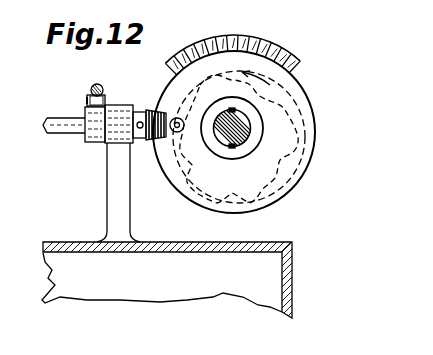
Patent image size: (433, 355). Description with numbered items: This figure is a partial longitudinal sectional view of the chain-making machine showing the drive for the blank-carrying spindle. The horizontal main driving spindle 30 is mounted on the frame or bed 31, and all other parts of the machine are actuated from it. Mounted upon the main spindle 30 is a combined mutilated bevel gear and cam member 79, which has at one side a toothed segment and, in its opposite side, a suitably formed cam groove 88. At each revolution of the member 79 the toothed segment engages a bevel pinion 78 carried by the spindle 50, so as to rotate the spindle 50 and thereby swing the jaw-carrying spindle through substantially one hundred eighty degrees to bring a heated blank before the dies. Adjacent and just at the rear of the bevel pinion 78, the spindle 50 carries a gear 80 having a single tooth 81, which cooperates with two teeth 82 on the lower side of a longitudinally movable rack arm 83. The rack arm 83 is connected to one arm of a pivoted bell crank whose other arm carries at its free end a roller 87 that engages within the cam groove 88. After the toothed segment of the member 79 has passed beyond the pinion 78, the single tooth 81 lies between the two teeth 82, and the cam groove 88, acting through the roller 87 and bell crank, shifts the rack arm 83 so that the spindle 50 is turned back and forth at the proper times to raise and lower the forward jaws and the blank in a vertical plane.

The main driving spindle 30 is at (250, 140).
The frame or bed 31 is at (292, 265).
The spindle 50 is at (68, 134).
The bevel pinion 78 is at (148, 143).
The combined mutilated bevel gear and cam member 79 is at (303, 70).
The gear 80 is at (96, 141).
The single tooth 81 is at (88, 99).
The teeth 82 is at (106, 92).
The rack arm 83 is at (92, 80).
The roller 87 is at (177, 133).
The cam groove 88 is at (298, 118).